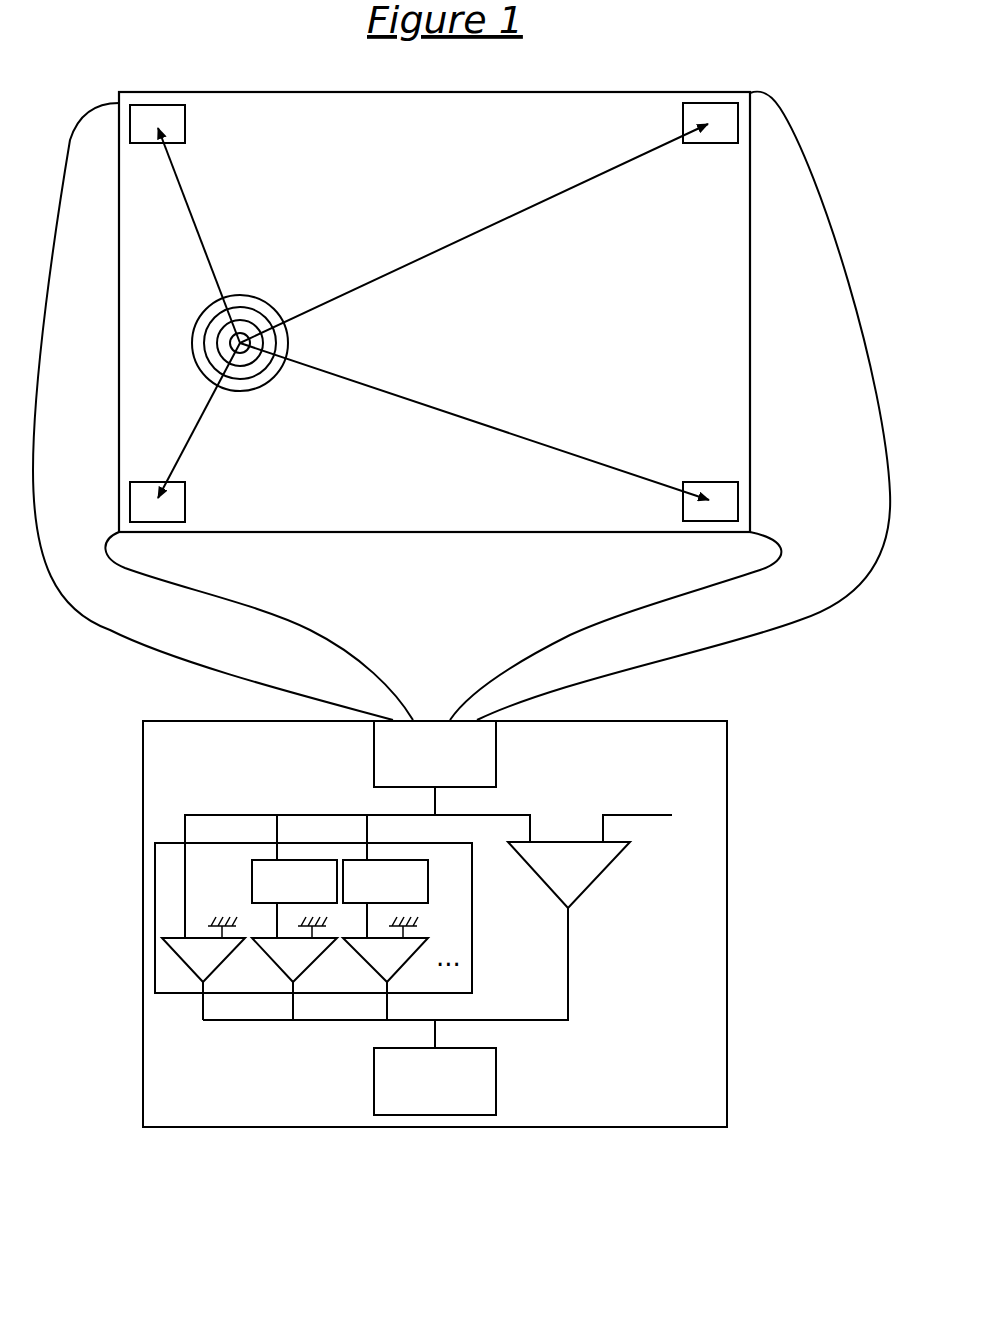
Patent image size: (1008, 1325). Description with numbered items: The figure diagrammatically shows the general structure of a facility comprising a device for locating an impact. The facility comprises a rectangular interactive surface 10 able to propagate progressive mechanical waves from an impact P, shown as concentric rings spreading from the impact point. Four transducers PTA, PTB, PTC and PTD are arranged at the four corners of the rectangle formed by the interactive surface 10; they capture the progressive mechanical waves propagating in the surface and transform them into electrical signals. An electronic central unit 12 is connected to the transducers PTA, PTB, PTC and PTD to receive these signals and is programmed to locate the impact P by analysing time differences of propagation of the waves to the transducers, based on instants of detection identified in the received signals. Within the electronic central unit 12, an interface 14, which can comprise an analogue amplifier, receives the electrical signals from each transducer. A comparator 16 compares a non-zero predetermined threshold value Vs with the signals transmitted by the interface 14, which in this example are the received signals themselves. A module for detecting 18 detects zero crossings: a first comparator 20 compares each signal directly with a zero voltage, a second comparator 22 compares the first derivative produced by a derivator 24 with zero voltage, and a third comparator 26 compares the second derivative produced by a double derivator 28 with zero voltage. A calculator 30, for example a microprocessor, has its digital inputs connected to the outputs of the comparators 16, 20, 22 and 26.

The interactive surface 10 is at (434, 312).
The electronic central unit 12 is at (142, 777).
The interface 14 is at (435, 754).
The comparator 16 is at (569, 875).
The module for detecting 18 is at (154, 917).
The first comparator 20 is at (203, 949).
The second comparator 22 is at (294, 949).
The derivator 24 is at (294, 881).
The third comparator 26 is at (385, 949).
The double derivator 28 is at (385, 881).
The calculator 30 is at (435, 1081).
The impact P is at (248, 318).
The transducer PTA is at (186, 122).
The transducer PTB is at (706, 144).
The transducer PTC is at (693, 481).
The transducer PTD is at (186, 498).
The predetermined threshold value Vs is at (695, 820).